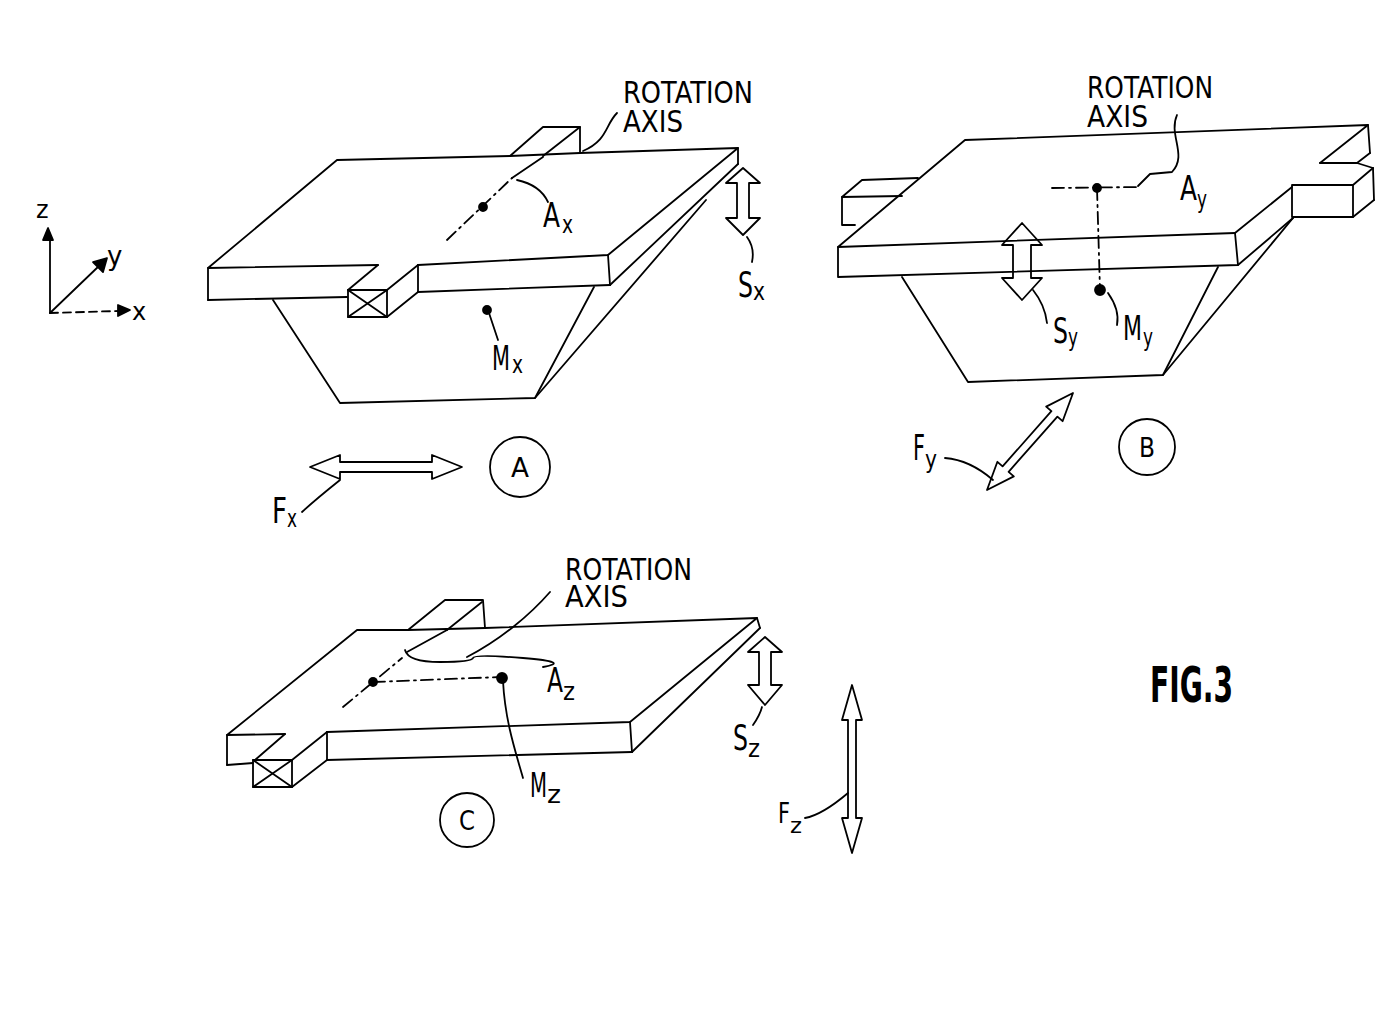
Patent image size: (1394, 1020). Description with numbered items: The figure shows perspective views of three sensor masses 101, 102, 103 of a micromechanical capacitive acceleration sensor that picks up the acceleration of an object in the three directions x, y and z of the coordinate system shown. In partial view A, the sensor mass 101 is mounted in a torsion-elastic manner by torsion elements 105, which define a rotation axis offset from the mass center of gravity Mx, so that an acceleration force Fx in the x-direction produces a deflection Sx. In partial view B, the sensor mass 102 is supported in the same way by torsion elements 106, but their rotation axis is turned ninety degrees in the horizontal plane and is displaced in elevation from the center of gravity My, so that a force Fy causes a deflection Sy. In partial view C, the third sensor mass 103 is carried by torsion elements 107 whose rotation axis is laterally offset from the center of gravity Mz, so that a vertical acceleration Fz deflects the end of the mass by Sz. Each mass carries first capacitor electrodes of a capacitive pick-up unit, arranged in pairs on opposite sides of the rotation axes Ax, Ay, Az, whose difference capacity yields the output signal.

The sensor mass 101 is at (337, 352).
The sensor mass 102 is at (962, 322).
The sensor mass 103 is at (383, 747).
The torsion elements 105 is at (557, 127).
The torsion elements 106 is at (878, 188).
The torsion elements 107 is at (457, 605).